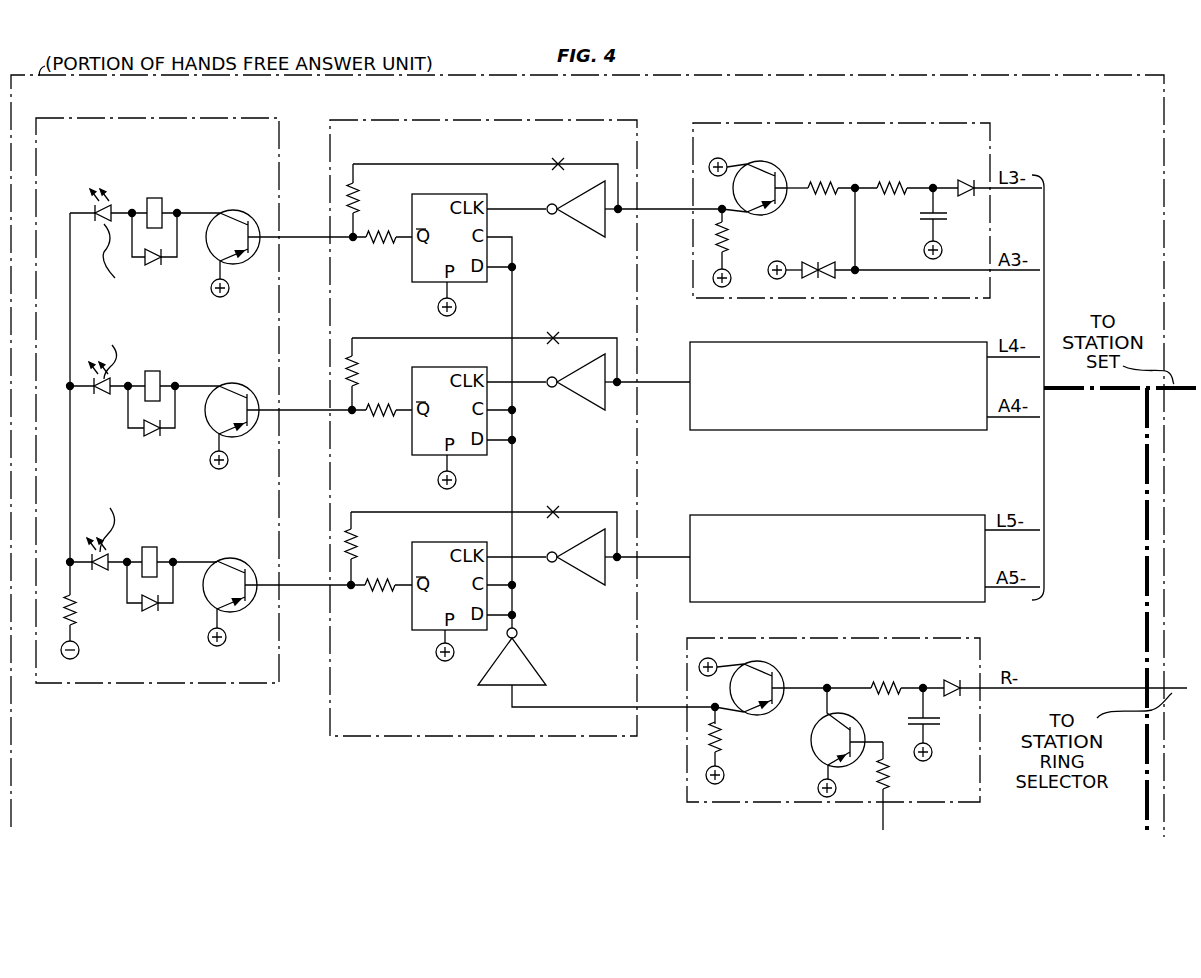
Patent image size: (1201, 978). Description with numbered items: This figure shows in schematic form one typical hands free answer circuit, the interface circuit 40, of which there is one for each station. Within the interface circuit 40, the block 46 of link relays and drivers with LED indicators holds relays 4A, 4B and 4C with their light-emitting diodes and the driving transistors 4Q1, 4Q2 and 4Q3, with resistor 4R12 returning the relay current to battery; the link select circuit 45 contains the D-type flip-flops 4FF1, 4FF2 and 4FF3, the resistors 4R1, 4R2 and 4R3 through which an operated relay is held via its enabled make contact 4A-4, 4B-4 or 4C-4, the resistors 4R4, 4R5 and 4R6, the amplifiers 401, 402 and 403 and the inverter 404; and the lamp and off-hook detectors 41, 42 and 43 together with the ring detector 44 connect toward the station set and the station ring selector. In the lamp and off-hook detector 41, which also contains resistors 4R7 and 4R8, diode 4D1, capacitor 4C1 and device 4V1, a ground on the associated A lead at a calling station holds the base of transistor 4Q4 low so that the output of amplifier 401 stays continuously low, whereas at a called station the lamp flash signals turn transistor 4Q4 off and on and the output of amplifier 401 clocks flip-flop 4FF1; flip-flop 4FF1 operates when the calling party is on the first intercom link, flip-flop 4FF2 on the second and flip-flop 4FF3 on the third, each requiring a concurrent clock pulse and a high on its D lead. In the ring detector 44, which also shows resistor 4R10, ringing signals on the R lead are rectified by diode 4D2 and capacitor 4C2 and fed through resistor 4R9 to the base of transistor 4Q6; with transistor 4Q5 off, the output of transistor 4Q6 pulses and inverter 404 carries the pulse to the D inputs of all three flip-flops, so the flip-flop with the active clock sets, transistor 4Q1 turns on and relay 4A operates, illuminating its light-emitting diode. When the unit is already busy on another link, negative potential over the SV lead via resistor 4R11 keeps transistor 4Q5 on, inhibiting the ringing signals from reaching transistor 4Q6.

The interface circuit 40 is at (690, 103).
The lamp and off-hook detector 41 is at (948, 124).
The lamp and off-hook detector 42 is at (854, 344).
The lamp and off-hook detector 43 is at (854, 513).
The ring detector 44 is at (838, 641).
The link select circuit 45 is at (458, 120).
The link relays and drivers with LED indicators 46 is at (176, 120).
The amplifier 401 is at (592, 236).
The inverter 402 is at (590, 409).
The inverter 403 is at (585, 584).
The inverter 404 is at (522, 652).
The relay 4A is at (157, 203).
The relay 4B is at (152, 393).
The relay 4C is at (150, 568).
The make contact 4A-4 is at (552, 160).
The make contact 4B-4 is at (484, 349).
The make contact 4C-4 is at (484, 523).
The transistor 4Q1 is at (240, 242).
The transistor 4Q2 is at (234, 383).
The transistor 4Q3 is at (235, 559).
The transistor 4Q4 is at (774, 172).
The transistor 4Q5 is at (812, 760).
The transistor 4Q6 is at (777, 677).
The resistor 4R1 is at (372, 200).
The resistor 4R2 is at (382, 247).
The resistor 4R3 is at (371, 374).
The resistor 4R4 is at (382, 420).
The resistor 4R5 is at (371, 548).
The resistor 4R6 is at (381, 595).
The resistor 4R7 is at (824, 201).
The resistor 4R8 is at (893, 177).
The resistor 4R9 is at (885, 677).
The resistor 4R10 is at (739, 746).
The resistor 4R11 is at (909, 787).
The resistor 4R12 is at (94, 601).
The flip-flop 4FF1 is at (430, 191).
The flip-flop 4FF2 is at (430, 363).
The flip-flop 4FF3 is at (430, 538).
The diode 4D1 is at (968, 178).
The diode 4D2 is at (955, 678).
The capacitor 4C1 is at (926, 224).
The capacitor 4C2 is at (943, 725).
The varistor 4V1 is at (820, 281).